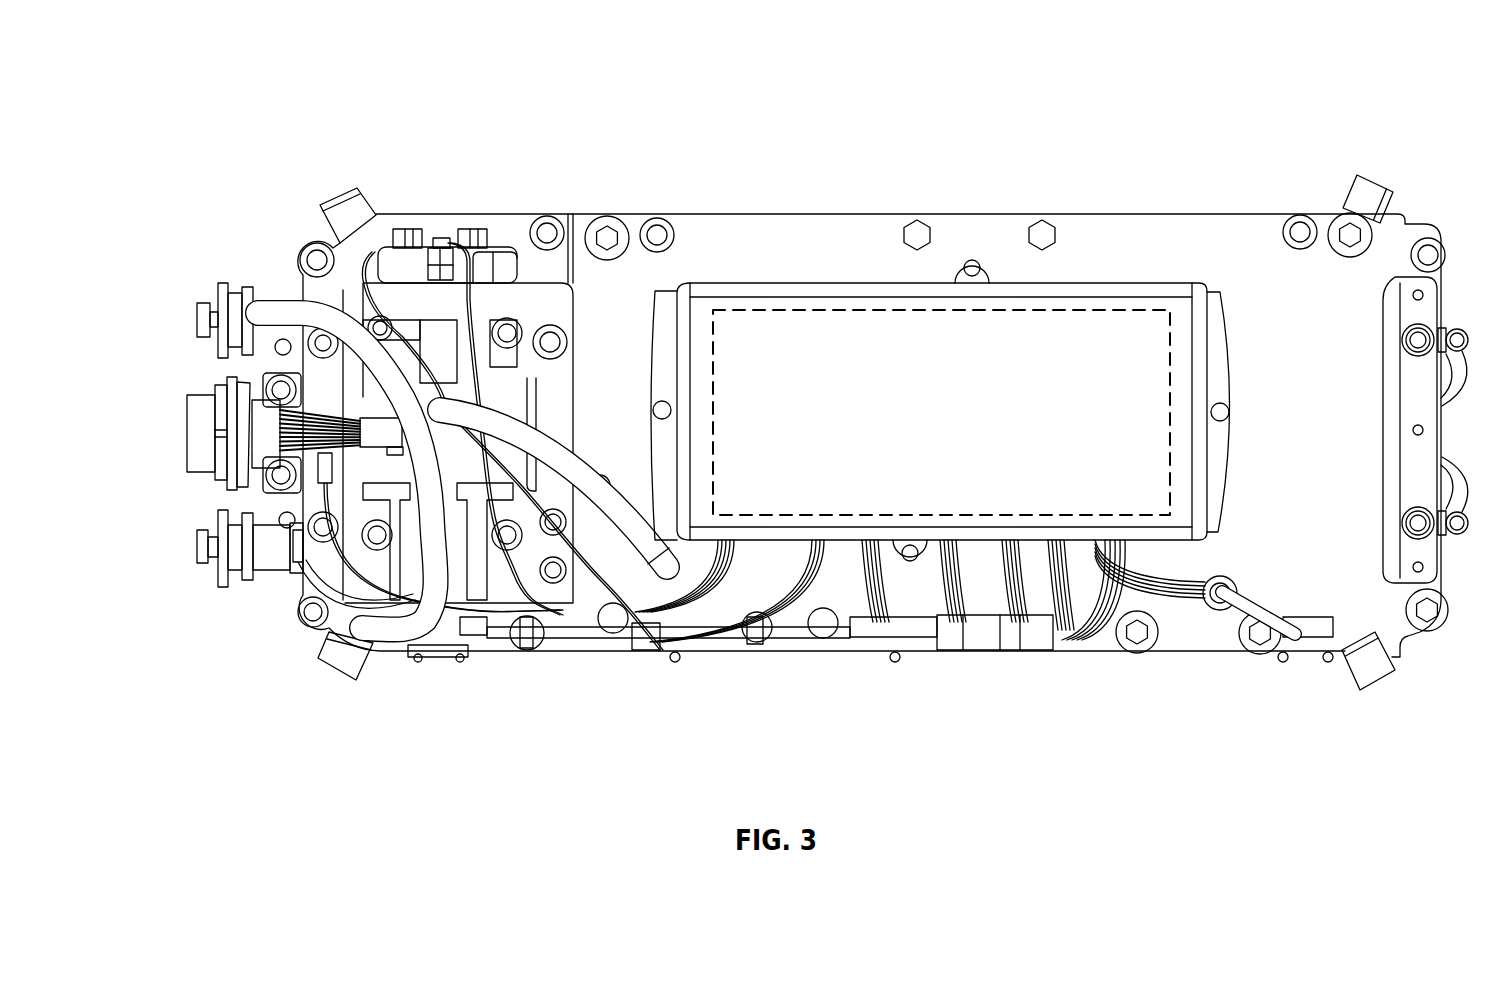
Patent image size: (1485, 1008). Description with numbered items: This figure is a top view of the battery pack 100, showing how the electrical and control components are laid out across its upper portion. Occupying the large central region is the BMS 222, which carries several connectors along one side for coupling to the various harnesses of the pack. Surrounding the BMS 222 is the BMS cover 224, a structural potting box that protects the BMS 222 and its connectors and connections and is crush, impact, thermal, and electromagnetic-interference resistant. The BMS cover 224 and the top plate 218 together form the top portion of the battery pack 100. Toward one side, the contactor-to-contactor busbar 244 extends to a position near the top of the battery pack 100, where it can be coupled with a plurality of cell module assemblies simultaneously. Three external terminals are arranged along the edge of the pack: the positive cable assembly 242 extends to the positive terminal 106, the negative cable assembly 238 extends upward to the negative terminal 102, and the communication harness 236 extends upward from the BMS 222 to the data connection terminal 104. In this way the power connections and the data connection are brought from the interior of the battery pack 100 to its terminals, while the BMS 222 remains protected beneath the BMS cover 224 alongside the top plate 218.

The battery pack 100 is at (311, 99).
The negative terminal 102 is at (190, 548).
The data connection terminal 104 is at (183, 433).
The positive terminal 106 is at (184, 318).
The top plate 218 is at (1212, 228).
The BMS 222 is at (928, 393).
The BMS cover 224 is at (775, 325).
The communication harness 236 is at (630, 527).
The negative cable assembly 238 is at (350, 611).
The positive cable assembly 242 is at (287, 299).
The contactor-to-contactor busbar 244 is at (527, 303).